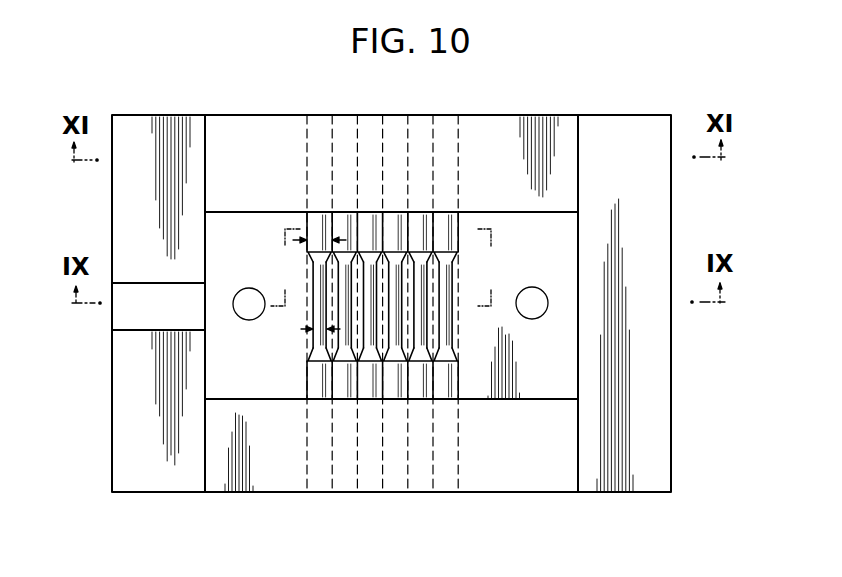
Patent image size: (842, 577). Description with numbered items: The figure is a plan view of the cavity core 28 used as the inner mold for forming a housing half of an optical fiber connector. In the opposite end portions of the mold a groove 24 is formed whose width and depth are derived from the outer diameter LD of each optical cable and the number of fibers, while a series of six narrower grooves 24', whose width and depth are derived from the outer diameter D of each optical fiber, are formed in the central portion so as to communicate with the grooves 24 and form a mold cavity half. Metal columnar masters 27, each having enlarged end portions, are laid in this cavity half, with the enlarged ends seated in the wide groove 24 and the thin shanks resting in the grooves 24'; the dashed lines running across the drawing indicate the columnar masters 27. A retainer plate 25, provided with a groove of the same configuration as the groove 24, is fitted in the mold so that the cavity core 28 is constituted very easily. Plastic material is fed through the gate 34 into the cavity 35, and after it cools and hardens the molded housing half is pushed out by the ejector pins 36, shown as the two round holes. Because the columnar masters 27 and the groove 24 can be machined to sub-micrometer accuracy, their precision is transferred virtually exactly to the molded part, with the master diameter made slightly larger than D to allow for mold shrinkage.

The groove 24 is at (414, 305).
The grooves 24' is at (408, 306).
The retainer plate 25 is at (257, 118).
The columnar master 27 is at (458, 118).
The cavity core 28 is at (674, 208).
The gate 34 is at (112, 321).
The cavity 35 is at (507, 386).
The ejector pins 36 is at (249, 320).
The outer diameter of optical cable LD is at (318, 248).
The outer diameter of optical fiber D is at (318, 320).